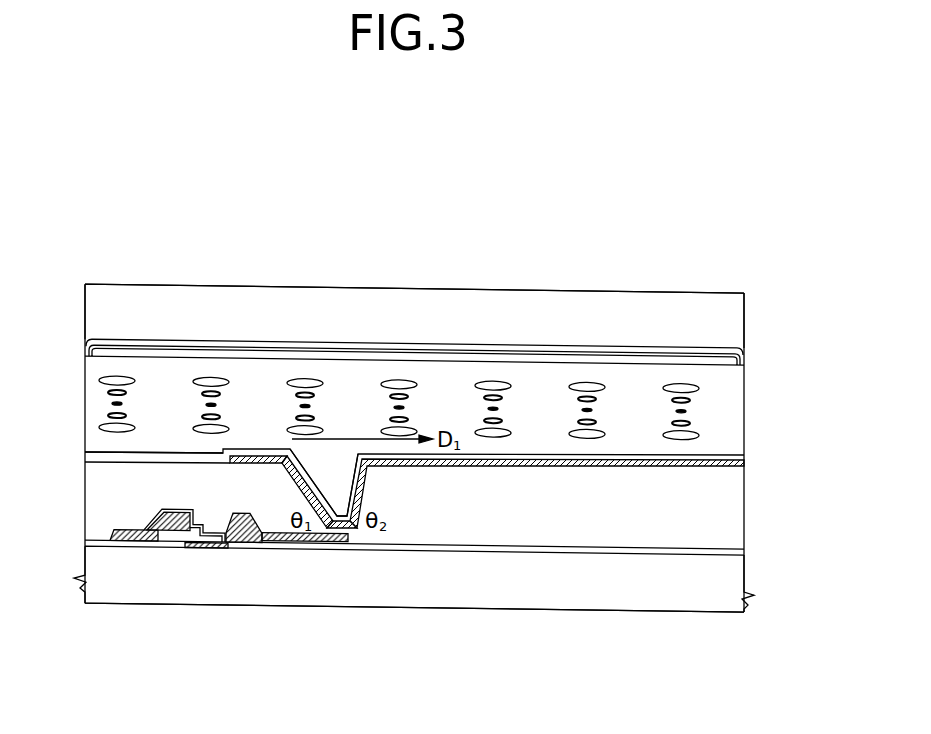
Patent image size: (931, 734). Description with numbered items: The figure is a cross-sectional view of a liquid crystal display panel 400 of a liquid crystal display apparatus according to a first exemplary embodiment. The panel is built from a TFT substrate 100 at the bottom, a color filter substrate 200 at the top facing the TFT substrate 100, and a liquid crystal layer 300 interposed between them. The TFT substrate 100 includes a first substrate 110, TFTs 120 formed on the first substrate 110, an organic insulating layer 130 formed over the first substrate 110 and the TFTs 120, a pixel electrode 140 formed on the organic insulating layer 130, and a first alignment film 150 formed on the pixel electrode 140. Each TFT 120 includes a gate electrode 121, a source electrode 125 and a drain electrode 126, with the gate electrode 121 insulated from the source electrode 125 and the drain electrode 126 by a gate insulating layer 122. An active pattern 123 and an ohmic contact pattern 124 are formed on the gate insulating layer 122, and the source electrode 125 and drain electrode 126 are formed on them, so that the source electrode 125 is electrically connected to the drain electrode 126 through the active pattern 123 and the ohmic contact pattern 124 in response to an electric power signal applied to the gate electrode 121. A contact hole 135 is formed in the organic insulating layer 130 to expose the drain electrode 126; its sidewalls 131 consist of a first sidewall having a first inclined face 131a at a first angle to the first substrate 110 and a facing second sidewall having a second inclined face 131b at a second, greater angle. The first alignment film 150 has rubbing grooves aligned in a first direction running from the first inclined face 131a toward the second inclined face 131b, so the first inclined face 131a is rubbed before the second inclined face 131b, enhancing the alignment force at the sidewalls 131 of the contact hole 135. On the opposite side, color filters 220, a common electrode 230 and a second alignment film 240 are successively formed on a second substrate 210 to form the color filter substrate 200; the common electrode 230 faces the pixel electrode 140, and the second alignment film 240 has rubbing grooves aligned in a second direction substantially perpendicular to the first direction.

The liquid crystal display panel 400 is at (427, 152).
The color filter substrate 200 is at (451, 298).
The second substrate 210 is at (633, 302).
The color filters 220 is at (566, 347).
The common electrode 230 is at (478, 349).
The second alignment film 240 is at (387, 353).
The liquid crystal layer 300 is at (733, 420).
The TFT substrate 100 is at (445, 542).
The first substrate 110 is at (612, 586).
The TFT 120 is at (239, 603).
The gate electrode 121 is at (215, 549).
The gate insulating layer 122 is at (172, 549).
The active pattern 123 is at (162, 549).
The ohmic contact pattern 124 is at (248, 549).
The source electrode 125 is at (115, 549).
The drain electrode 126 is at (333, 592).
The organic insulating layer 130 is at (458, 542).
The sidewalls 131 is at (478, 457).
The first inclined face 131a is at (305, 492).
The second inclined face 131b is at (365, 478).
The contact hole 135 is at (338, 457).
The pixel electrode 140 is at (541, 464).
The first alignment film 150 is at (687, 461).